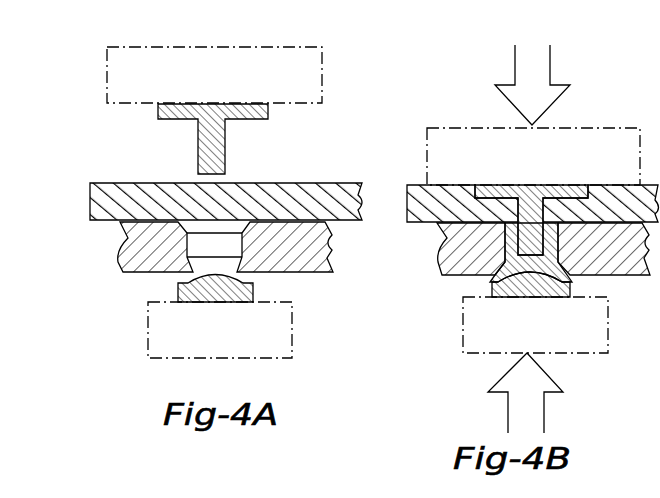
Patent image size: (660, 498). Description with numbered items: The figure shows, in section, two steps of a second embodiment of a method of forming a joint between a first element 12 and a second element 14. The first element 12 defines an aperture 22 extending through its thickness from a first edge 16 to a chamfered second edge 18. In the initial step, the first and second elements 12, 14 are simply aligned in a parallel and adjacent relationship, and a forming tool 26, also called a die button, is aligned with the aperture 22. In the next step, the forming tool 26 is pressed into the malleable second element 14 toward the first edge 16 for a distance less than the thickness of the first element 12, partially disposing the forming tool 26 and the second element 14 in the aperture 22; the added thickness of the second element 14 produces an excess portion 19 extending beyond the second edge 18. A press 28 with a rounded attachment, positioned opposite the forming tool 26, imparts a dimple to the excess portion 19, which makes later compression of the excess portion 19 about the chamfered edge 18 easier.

In FIG. 4A, the first element 12 is at (121, 245).
In FIG. 4B, the first element 12 is at (438, 245).
In FIG. 4A, the second element 14 is at (95, 183).
In FIG. 4B, the second element 14 is at (413, 185).
In FIG. 4A, the first edge 16 is at (234, 222).
In FIG. 4B, the first edge 16 is at (553, 216).
In FIG. 4A, the second edge 18 is at (187, 272).
In FIG. 4B, the second edge 18 is at (492, 280).
In FIG. 4B, the excess portion 19 is at (572, 280).
In FIG. 4A, the aperture 22 is at (225, 250).
In FIG. 4A, the forming tool 26 is at (200, 150).
In FIG. 4B, the forming tool 26 is at (533, 207).
In FIG. 4A, the press 28 is at (223, 343).
In FIG. 4B, the press 28 is at (538, 343).